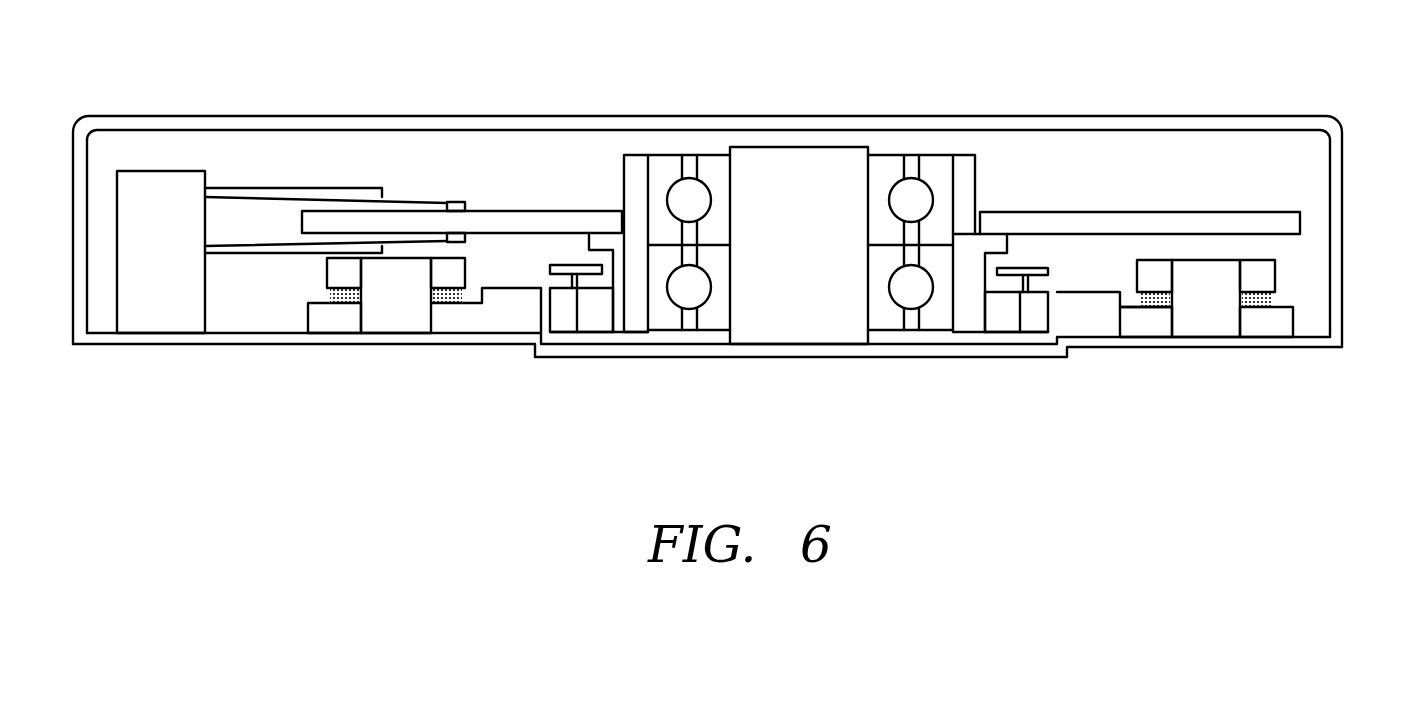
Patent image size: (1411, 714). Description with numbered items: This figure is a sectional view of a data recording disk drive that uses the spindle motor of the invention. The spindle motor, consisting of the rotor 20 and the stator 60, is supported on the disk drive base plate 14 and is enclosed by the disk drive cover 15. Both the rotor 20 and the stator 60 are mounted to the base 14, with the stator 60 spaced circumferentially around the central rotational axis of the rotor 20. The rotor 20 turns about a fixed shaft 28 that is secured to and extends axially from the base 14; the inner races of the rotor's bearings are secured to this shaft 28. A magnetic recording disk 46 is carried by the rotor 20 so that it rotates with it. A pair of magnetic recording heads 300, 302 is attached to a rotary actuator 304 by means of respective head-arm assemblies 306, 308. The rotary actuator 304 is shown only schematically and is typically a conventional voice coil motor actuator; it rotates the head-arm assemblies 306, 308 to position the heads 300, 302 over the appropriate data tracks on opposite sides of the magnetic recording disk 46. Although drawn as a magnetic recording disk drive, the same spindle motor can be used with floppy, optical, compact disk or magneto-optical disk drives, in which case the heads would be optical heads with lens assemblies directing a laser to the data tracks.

The base 14 is at (258, 340).
The disk drive cover 15 is at (1251, 118).
The rotor 20 is at (992, 195).
The fixed shaft 28 is at (764, 165).
The magnetic recording disk 46 is at (553, 216).
The stator 60 is at (1305, 276).
The magnetic recording head 300 is at (467, 202).
The magnetic recording head 302 is at (468, 243).
The rotary actuator 304 is at (160, 318).
The head-arm assembly 306 is at (340, 188).
The head-arm assembly 308 is at (253, 247).